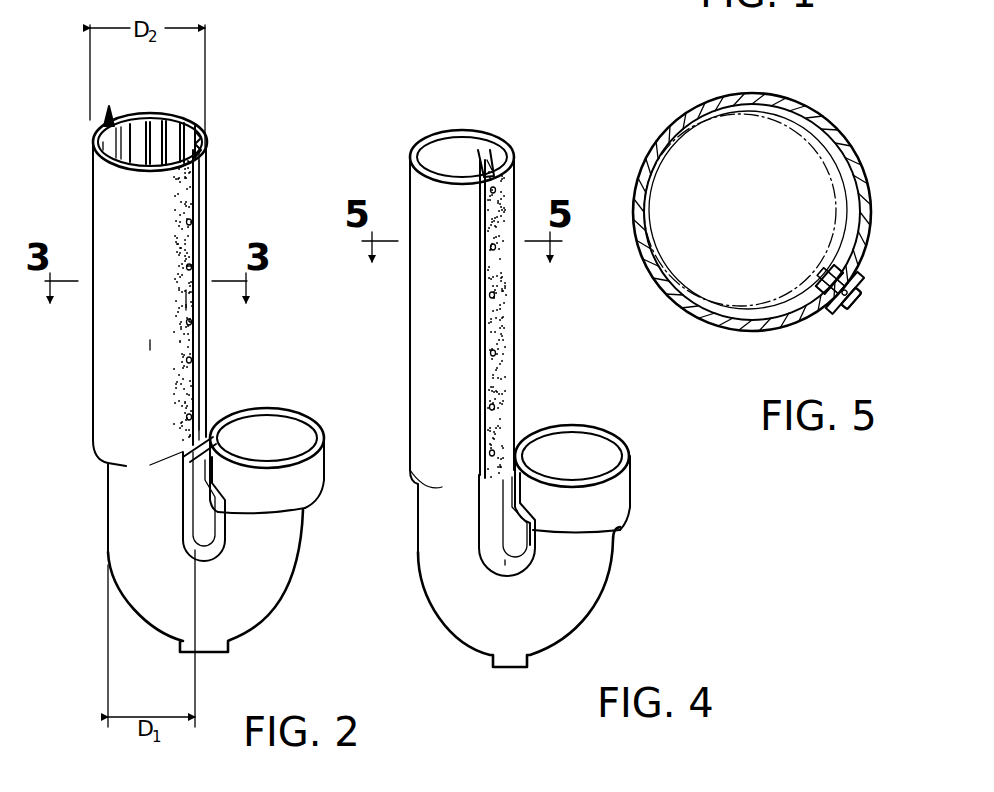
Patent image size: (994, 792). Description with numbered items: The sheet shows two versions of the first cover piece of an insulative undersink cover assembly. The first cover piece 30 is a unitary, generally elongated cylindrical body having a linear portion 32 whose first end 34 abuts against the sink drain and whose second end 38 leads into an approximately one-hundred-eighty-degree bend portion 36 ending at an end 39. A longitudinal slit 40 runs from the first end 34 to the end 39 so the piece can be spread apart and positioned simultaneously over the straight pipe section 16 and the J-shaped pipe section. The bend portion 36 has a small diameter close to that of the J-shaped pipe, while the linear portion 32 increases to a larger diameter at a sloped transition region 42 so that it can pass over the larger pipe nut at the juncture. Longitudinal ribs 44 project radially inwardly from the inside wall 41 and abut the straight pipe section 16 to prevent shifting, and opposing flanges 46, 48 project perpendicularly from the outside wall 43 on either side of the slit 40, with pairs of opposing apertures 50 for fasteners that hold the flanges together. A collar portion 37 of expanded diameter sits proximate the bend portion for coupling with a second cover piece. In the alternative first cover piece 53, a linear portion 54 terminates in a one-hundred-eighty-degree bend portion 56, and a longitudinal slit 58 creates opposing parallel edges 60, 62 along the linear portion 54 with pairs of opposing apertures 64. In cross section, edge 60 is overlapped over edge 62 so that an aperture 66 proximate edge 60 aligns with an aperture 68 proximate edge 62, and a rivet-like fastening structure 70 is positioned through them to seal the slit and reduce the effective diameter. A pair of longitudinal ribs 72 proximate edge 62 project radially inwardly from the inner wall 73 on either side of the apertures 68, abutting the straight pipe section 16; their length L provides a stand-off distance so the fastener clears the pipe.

In FIG. 5, the straight pipe section 16 is at (798, 130).
In FIG. 2, the first cover piece 30 is at (285, 131).
In FIG. 2, the linear portion 32 is at (96, 205).
In FIG. 2, the first end 34 is at (91, 144).
In FIG. 2, the bend portion 36 is at (278, 607).
In FIG. 2, the collar portion 37 is at (322, 458).
In FIG. 4, the collar portion 37 is at (632, 485).
In FIG. 2, the second end 38 is at (82, 434).
In FIG. 2, the end of the bend portion 39 is at (287, 412).
In FIG. 2, the longitudinal slit 40 is at (207, 202).
In FIG. 2, the inside wall 41 is at (140, 125).
In FIG. 2, the transition region 42 is at (93, 452).
In FIG. 2, the outside wall 43 is at (113, 362).
In FIG. 2, the longitudinal ribs 44 is at (111, 106).
In FIG. 2, the flange 46 is at (190, 300).
In FIG. 2, the flange 48 is at (207, 322).
In FIG. 2, the apertures 50 is at (182, 257).
In FIG. 4, the first cover piece 53 is at (514, 124).
In FIG. 5, the first cover piece 53 is at (781, 92).
In FIG. 4, the linear portion 54 is at (425, 313).
In FIG. 4, the bend portion 56 is at (452, 633).
In FIG. 4, the longitudinal slit 58 is at (517, 568).
In FIG. 4, the edge 60 is at (480, 370).
In FIG. 5, the edge 60 is at (826, 313).
In FIG. 4, the edge 62 is at (510, 160).
In FIG. 5, the edge 62 is at (838, 233).
In FIG. 4, the aperture pairs 64 is at (496, 350).
In FIG. 5, the aperture pairs 64 is at (832, 313).
In FIG. 5, the aperture 66 is at (836, 302).
In FIG. 5, the aperture 68 is at (815, 306).
In FIG. 5, the fastening structure 70 is at (826, 268).
In FIG. 4, the longitudinal ribs 72 is at (492, 150).
In FIG. 5, the longitudinal ribs 72 is at (833, 254).
In FIG. 5, the inner wall 73 is at (765, 113).
In FIG. 5, the length L is at (845, 212).